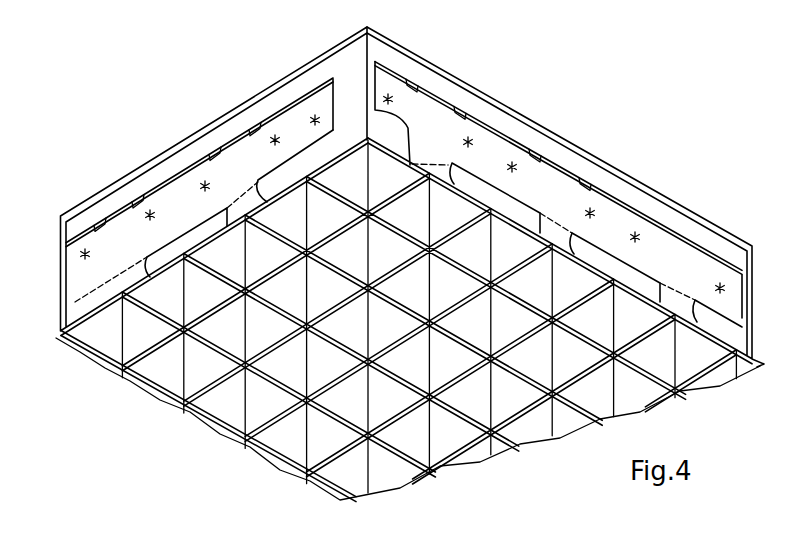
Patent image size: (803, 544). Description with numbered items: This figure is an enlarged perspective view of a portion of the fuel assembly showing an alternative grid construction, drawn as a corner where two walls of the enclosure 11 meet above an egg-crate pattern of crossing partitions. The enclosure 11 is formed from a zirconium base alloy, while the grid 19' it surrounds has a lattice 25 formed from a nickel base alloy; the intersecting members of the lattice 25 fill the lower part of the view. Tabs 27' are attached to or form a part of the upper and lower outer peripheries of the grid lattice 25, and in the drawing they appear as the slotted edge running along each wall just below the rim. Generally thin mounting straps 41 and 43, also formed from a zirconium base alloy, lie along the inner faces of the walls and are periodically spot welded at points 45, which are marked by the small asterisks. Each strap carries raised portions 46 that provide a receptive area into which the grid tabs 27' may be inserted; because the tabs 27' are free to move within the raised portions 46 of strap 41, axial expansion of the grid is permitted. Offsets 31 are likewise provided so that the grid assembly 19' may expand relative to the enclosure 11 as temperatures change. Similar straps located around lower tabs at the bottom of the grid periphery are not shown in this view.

The enclosure 11 is at (664, 198).
The grid 19' is at (186, 416).
The lattice 25 is at (285, 408).
The tabs 27' is at (404, 159).
The offsets 31 is at (588, 258).
The mounting strap 41 is at (72, 262).
The mounting strap 43 is at (748, 297).
The spot weld points 45 is at (128, 234).
The raised portions 46 is at (157, 237).